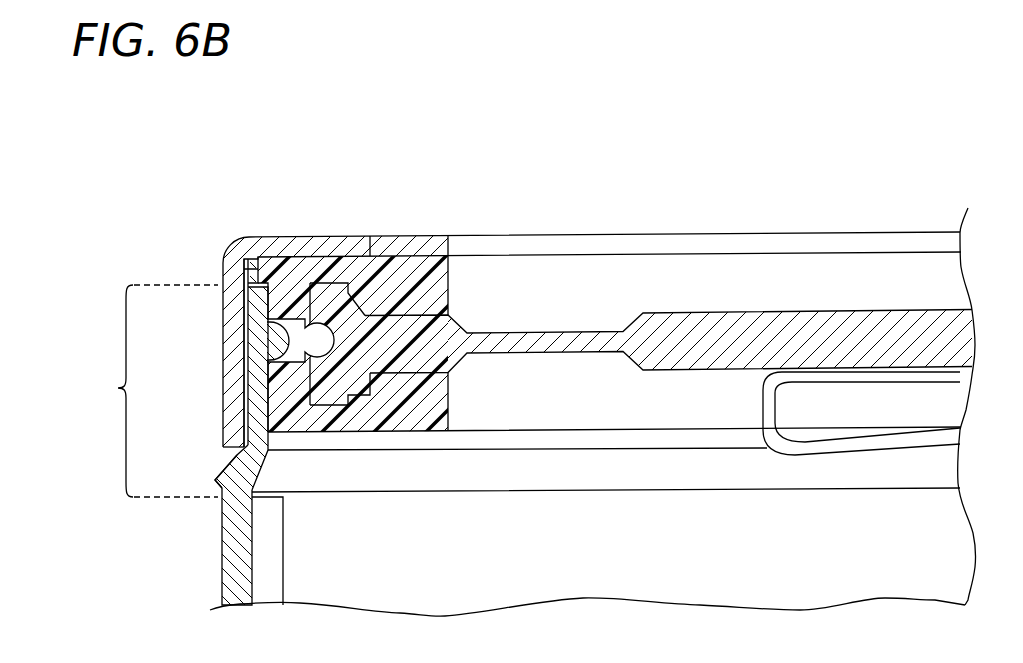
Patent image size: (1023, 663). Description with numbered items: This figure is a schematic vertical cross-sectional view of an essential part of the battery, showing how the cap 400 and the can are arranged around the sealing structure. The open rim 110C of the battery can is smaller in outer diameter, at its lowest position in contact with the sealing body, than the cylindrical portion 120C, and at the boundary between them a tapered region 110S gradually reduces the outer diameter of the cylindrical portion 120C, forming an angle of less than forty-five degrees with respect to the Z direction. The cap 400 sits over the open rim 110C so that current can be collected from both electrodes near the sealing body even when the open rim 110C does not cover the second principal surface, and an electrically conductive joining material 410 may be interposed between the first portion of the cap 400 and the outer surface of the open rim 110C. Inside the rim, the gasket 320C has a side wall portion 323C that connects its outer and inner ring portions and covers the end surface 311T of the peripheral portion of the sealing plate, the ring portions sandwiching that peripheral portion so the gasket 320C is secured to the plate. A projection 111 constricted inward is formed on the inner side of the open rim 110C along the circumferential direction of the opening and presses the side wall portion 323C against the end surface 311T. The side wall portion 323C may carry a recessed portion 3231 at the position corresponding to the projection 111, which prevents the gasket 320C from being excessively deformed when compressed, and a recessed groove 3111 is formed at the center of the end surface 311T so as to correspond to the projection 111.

The cap 400 is at (305, 247).
The joining material 410 is at (243, 261).
The side wall portion 323C is at (243, 279).
The gasket 320C is at (432, 265).
The recessed groove 3111 is at (364, 303).
The recessed portion 3231 is at (305, 347).
The end surface 311T is at (311, 390).
The projection 111 is at (262, 345).
The open rim 110C is at (313, 425).
The tapered region 110S is at (238, 466).
The cylindrical portion 120C is at (222, 563).